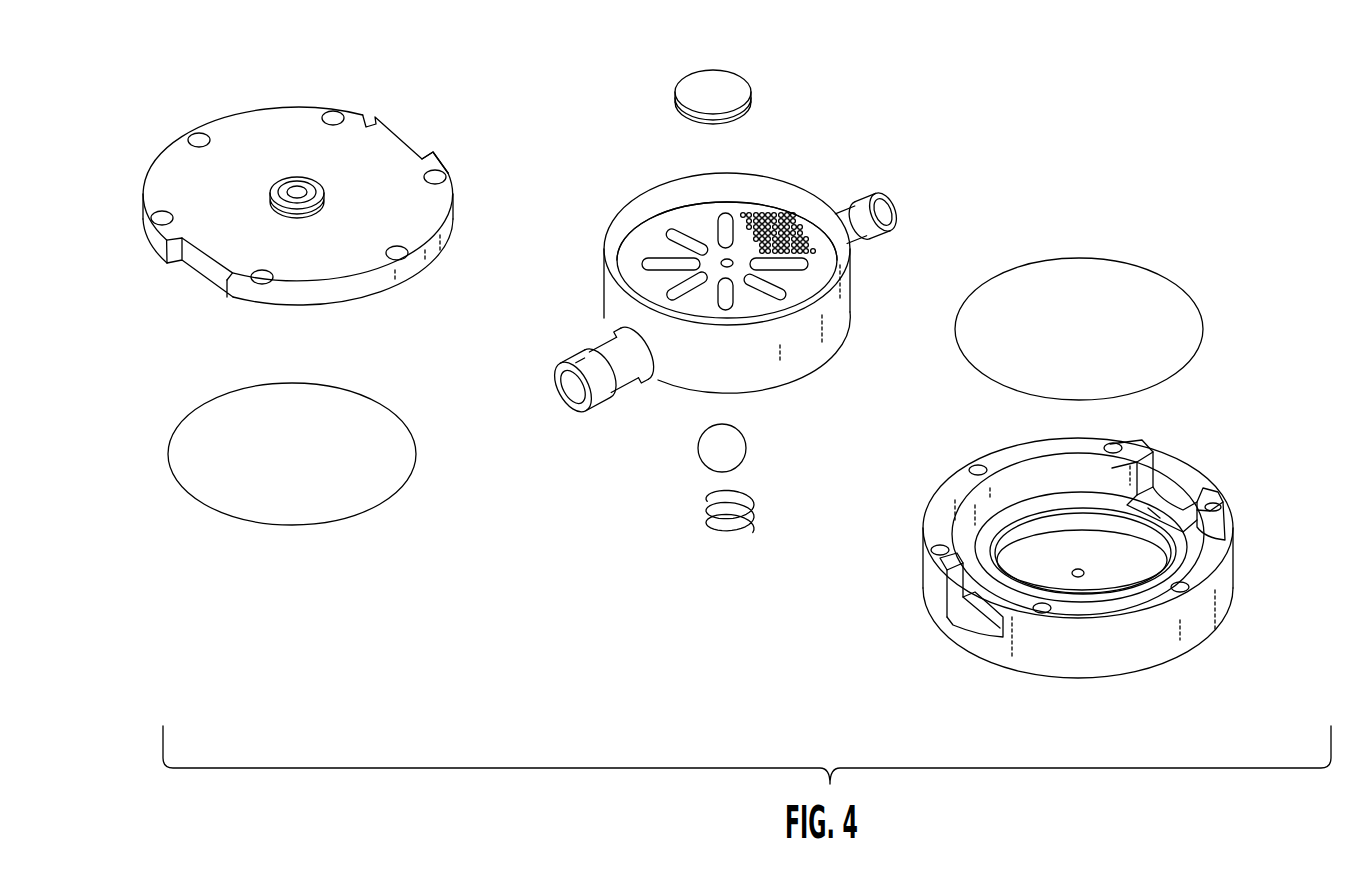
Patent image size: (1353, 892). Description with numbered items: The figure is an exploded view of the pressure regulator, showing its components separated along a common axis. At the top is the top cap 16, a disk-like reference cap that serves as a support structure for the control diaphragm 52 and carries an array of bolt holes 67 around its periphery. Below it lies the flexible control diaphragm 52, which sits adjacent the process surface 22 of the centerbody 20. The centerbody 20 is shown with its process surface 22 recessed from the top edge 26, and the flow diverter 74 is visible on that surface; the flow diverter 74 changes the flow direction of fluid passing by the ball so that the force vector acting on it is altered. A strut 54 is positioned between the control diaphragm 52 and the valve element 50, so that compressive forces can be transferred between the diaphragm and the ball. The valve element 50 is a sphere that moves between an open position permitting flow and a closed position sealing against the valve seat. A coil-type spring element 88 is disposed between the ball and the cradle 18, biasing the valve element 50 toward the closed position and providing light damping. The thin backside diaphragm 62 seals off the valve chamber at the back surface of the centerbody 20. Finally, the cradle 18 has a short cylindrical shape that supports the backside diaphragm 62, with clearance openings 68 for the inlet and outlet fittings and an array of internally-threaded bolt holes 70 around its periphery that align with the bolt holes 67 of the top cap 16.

The top cap 16 is at (265, 140).
The cradle 18 is at (1078, 560).
The centerbody 20 is at (712, 266).
The process surface 22 is at (752, 215).
The top edge 26 is at (655, 200).
The valve element 50 is at (740, 452).
The control diaphragm 52 is at (323, 488).
The strut 54 is at (740, 90).
The backside diaphragm 62 is at (1125, 280).
The bolt holes 67 is at (443, 170).
The clearance openings 68 is at (1148, 475).
The internally-threaded bolt holes 70 is at (1225, 507).
The flow diverter 74 is at (695, 223).
The spring element 88 is at (732, 540).